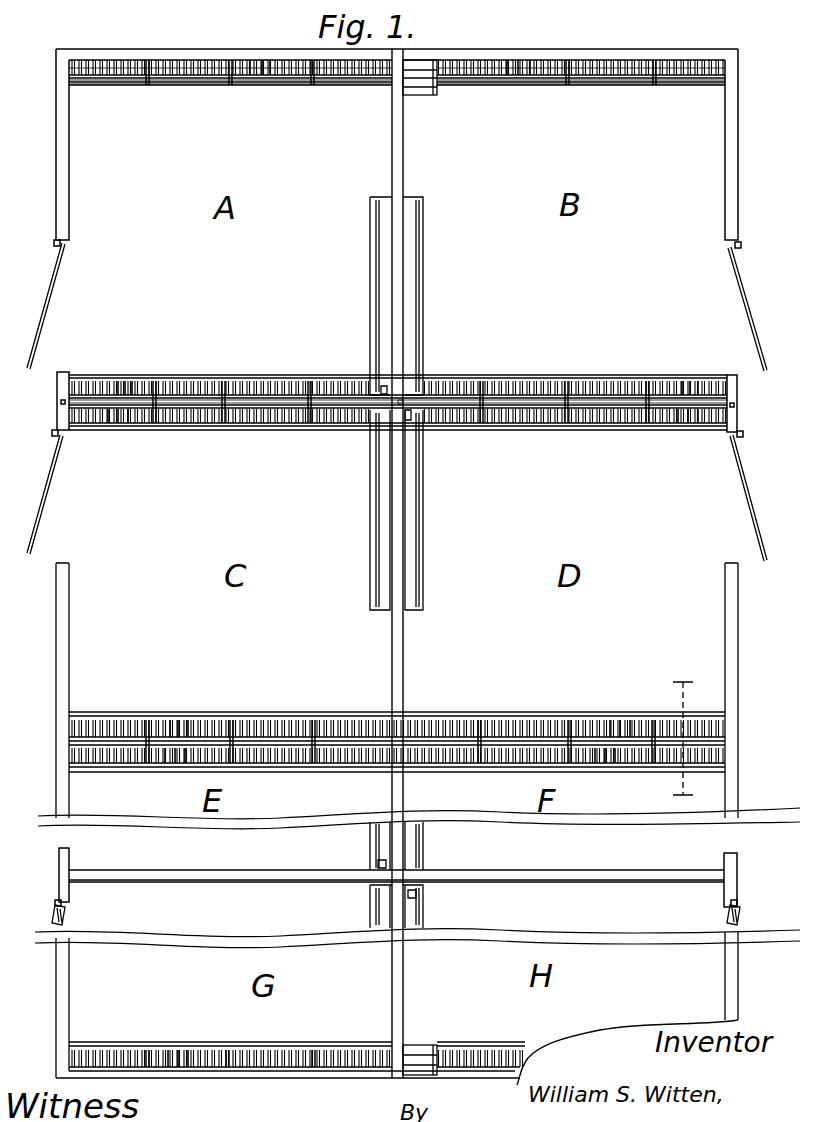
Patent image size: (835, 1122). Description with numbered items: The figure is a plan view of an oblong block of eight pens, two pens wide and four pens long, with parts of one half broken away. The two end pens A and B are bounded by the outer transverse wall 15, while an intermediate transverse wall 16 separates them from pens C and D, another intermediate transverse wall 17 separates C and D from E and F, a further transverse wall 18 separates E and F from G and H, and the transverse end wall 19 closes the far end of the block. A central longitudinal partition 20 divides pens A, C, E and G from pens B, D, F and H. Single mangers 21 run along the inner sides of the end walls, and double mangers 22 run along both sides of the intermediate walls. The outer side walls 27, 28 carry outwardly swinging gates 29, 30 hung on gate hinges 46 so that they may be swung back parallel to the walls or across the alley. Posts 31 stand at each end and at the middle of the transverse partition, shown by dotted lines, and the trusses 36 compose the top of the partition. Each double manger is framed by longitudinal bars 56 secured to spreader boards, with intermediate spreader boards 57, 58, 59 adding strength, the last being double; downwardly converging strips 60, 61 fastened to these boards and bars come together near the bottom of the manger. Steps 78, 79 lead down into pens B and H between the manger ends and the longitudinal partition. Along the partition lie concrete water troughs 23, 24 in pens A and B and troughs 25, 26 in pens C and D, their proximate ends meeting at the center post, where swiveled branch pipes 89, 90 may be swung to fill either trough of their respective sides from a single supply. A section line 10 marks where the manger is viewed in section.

The section line 10 is at (685, 738).
The outer transverse wall 15 is at (397, 535).
The intermediate transverse wall 16 is at (403, 576).
The intermediate transverse wall 17 is at (202, 742).
The transverse wall 18 is at (326, 862).
The transverse end wall 19 is at (368, 1078).
The central longitudinal partition 20 is at (400, 167).
The single manger 21 is at (272, 76).
The double manger 22 is at (338, 376).
The water trough 23 is at (383, 292).
The water trough 24 is at (413, 297).
The water trough 25 is at (388, 500).
The water trough 26 is at (415, 545).
The outer side wall 27 is at (60, 152).
The outer side wall 28 is at (735, 197).
The gate 29 is at (48, 300).
The gate 30 is at (56, 484).
The post 31 is at (60, 404).
The truss 36 is at (216, 53).
The gate hinge 46 is at (54, 243).
The longitudinal bar 56 is at (186, 80).
The intermediate spreader board 57 is at (147, 80).
The intermediate spreader board 58 is at (313, 72).
The double intermediate spreader board 59 is at (231, 75).
The converging strip 60 is at (132, 383).
The converging strip 61 is at (270, 60).
The steps 78 is at (420, 92).
The steps 79 is at (421, 1050).
The swiveled branch pipe 89 is at (388, 392).
The swiveled branch pipe 90 is at (411, 420).